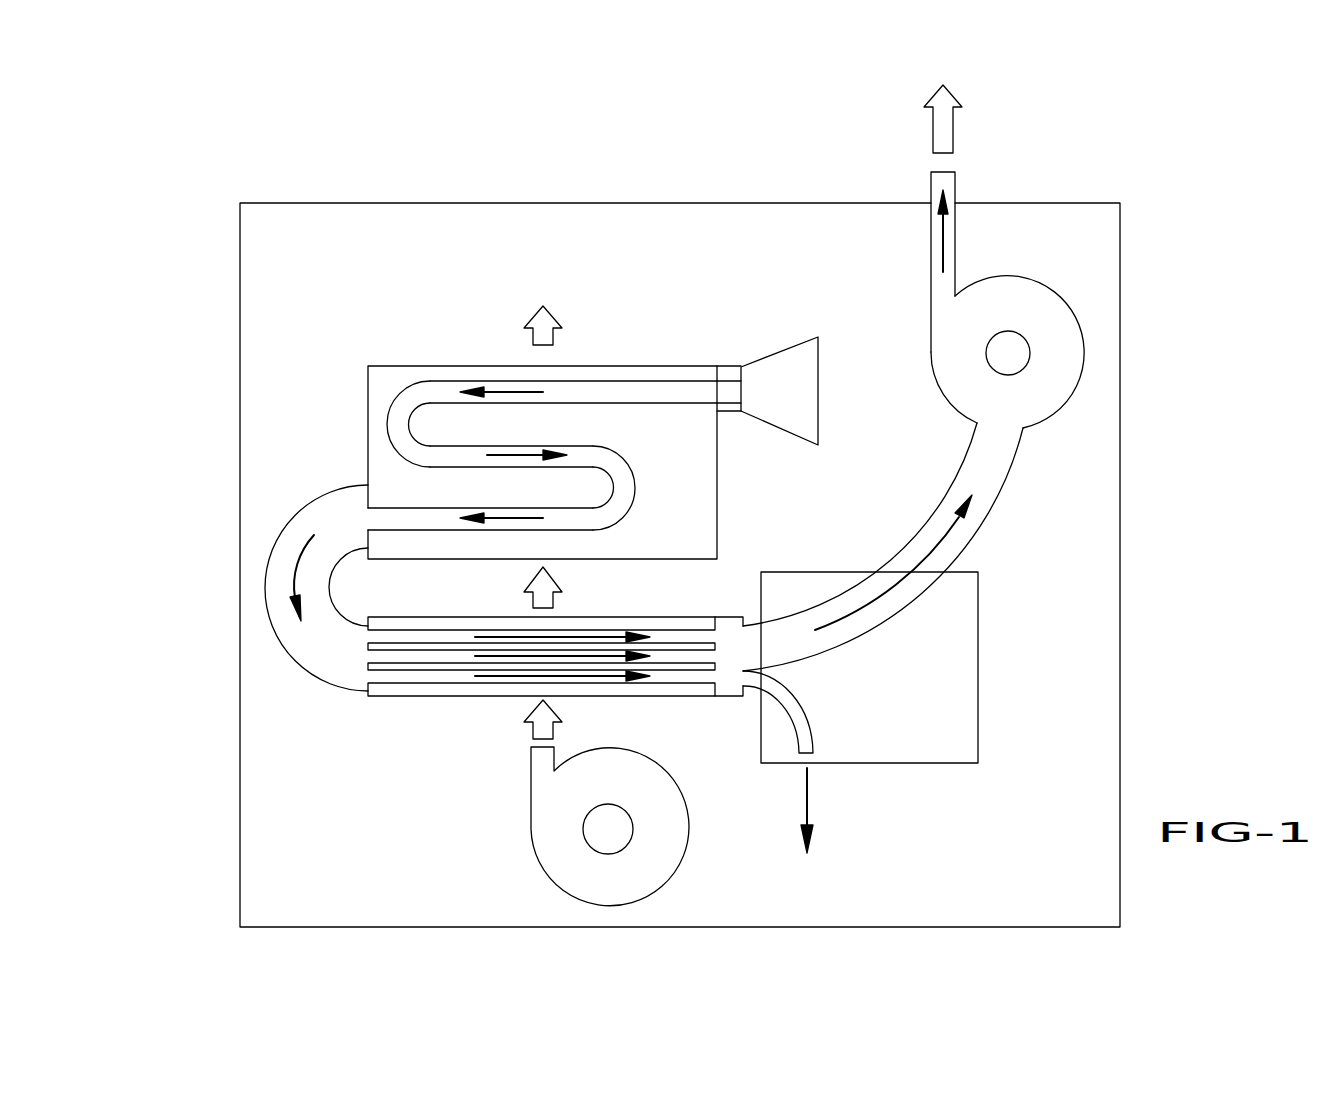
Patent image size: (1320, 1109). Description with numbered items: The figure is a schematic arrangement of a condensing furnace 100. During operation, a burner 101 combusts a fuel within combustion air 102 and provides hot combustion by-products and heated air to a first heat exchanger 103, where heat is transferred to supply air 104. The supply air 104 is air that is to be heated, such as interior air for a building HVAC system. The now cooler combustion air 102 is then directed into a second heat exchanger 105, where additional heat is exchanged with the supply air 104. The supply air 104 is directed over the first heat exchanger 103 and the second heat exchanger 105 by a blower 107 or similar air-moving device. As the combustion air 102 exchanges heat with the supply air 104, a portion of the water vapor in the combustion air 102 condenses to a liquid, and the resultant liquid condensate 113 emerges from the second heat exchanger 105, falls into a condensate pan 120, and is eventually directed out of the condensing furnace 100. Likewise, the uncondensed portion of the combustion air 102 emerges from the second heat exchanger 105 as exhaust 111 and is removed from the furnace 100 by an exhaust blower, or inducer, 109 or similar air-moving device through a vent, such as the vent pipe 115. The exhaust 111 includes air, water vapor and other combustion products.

The condensing furnace 100 is at (152, 189).
The burner 101 is at (803, 403).
The combustion air 102 is at (500, 455).
The first heat exchanger 103 is at (387, 378).
The supply air 104 is at (550, 318).
The second heat exchanger 105 is at (683, 625).
The blower 107 is at (663, 853).
The exhaust blower 109 is at (1022, 332).
The exhaust 111 is at (954, 130).
The liquid condensate 113 is at (807, 807).
The vent pipe 115 is at (929, 183).
The condensate pan 120 is at (972, 678).